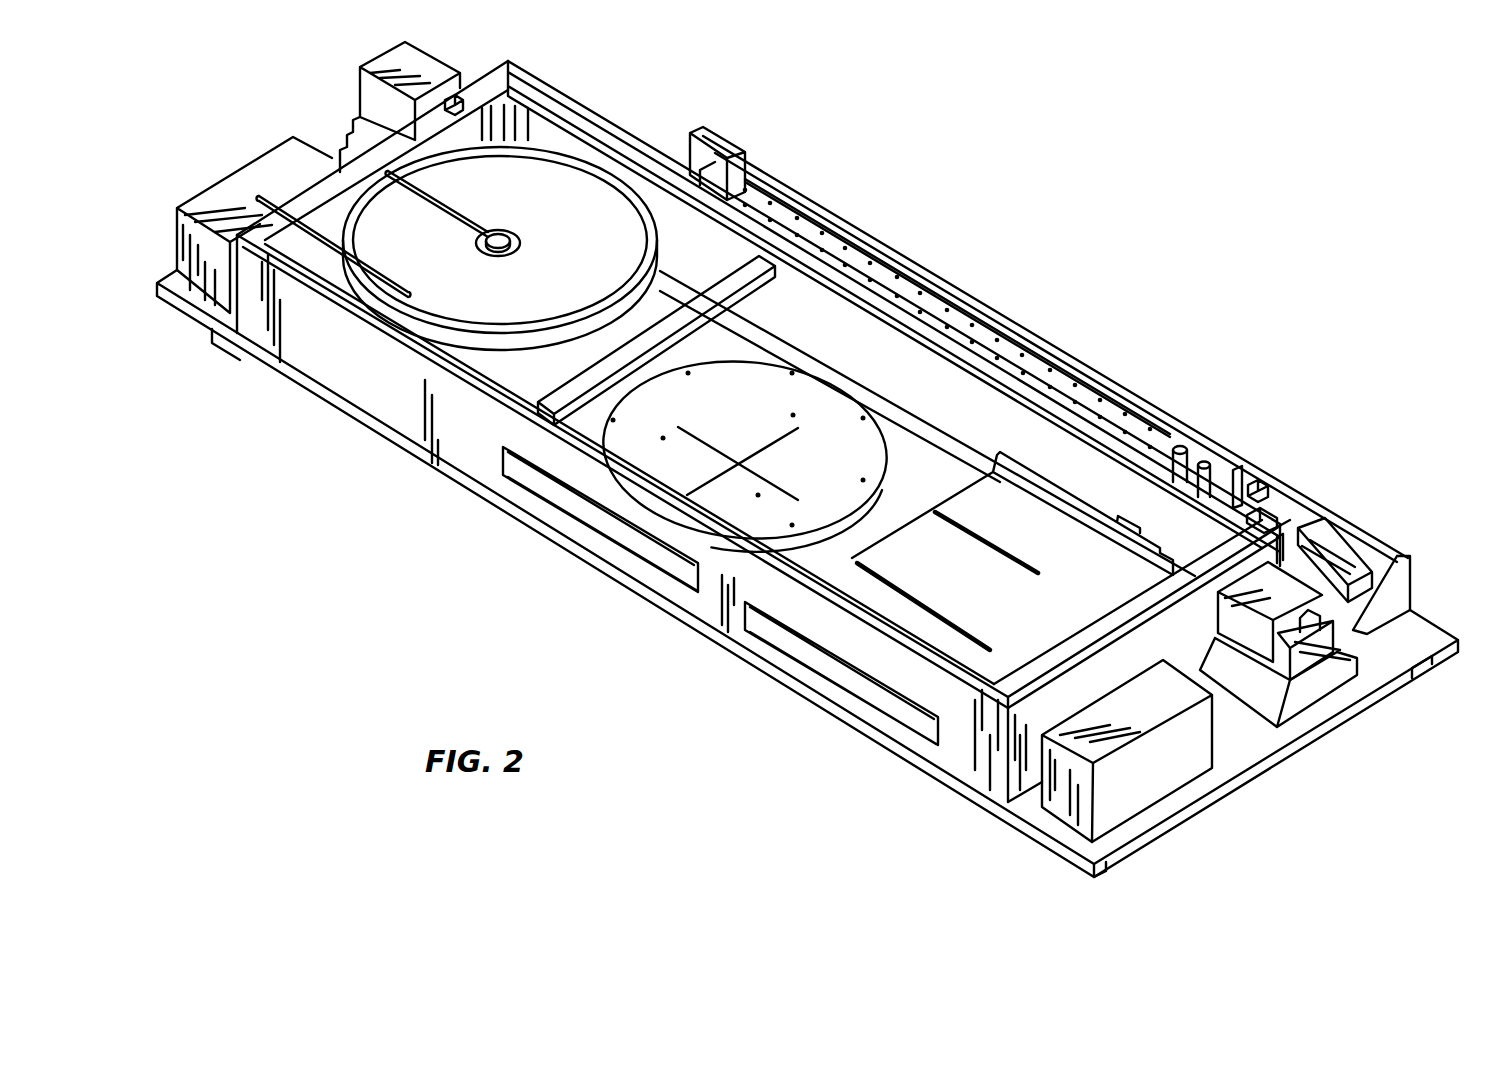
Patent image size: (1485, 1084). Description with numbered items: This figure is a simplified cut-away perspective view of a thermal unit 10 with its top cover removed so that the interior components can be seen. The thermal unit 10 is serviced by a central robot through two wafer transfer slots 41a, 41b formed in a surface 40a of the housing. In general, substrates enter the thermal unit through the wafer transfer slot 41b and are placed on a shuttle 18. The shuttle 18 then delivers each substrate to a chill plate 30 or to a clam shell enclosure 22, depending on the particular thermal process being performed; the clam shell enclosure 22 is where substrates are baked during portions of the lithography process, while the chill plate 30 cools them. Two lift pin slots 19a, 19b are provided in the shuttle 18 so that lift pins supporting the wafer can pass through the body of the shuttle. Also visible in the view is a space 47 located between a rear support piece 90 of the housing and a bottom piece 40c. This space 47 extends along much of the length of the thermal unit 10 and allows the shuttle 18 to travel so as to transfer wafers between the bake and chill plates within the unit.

The thermal unit 10 is at (1020, 95).
The shuttle 18 is at (1012, 532).
The lift pin slot 19a is at (945, 616).
The lift pin slot 19b is at (990, 540).
The clam shell enclosure 22 is at (532, 172).
The chill plate 30 is at (841, 485).
The surface 40a is at (283, 256).
The bottom piece 40c is at (1317, 644).
The wafer transfer slot 41a is at (668, 557).
The wafer transfer slot 41b is at (918, 717).
The space 47 is at (770, 330).
The rear support piece 90 is at (1055, 349).